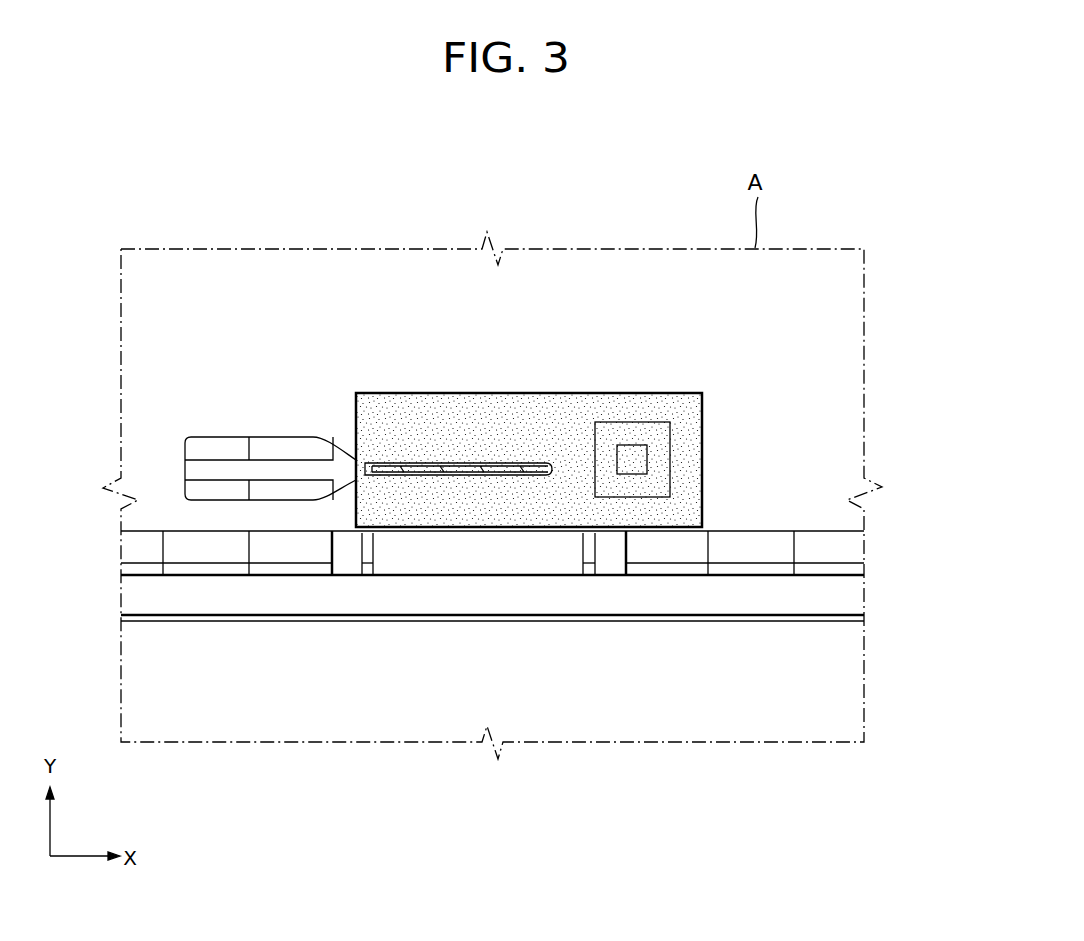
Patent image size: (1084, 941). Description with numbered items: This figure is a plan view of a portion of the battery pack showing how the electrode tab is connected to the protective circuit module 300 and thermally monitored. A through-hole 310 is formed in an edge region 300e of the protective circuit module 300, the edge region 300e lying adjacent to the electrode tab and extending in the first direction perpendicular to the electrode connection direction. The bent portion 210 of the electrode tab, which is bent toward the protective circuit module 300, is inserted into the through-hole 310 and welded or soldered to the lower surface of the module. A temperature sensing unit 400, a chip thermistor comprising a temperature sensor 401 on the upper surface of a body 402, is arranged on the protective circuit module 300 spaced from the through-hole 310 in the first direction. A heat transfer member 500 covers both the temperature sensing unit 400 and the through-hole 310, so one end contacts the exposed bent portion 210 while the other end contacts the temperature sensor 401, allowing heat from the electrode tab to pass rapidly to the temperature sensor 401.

The protective circuit module 300 is at (190, 277).
The edge region 300e is at (783, 512).
The through-hole 310 is at (292, 435).
The bent portion 210 is at (460, 475).
The heat transfer member 500 is at (703, 408).
The temperature sensing unit 400 is at (630, 569).
The temperature sensor 401 is at (633, 465).
The body 402 is at (608, 488).